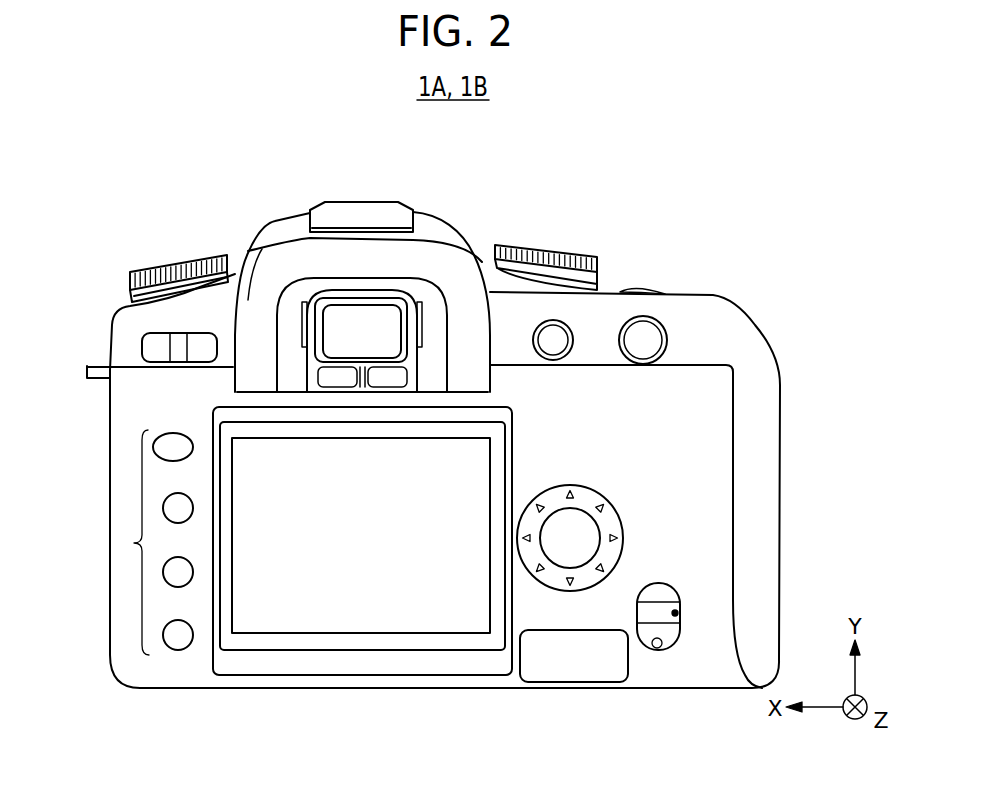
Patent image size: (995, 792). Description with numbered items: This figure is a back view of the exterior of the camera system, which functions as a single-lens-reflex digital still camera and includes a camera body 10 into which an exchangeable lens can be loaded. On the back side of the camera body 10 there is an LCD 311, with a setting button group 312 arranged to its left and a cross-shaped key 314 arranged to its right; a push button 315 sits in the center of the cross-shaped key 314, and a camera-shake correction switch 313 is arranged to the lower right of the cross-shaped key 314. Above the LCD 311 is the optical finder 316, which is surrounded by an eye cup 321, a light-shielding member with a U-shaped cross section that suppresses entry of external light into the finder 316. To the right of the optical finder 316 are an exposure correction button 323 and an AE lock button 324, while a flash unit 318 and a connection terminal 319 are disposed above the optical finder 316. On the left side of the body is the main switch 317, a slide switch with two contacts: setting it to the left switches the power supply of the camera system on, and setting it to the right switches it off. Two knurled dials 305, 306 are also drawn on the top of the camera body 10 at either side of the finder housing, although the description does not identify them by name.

The camera body 10 is at (134, 259).
The sub command dial 305 is at (539, 248).
The main command dial 306 is at (171, 267).
The LCD 311 is at (348, 618).
The setting button group 312 is at (134, 543).
The camera-shake correction switch 313 is at (657, 652).
The cross-shaped key 314 is at (580, 495).
The push button 315 is at (588, 528).
The optical finder 316 is at (388, 318).
The main switch 317 is at (140, 349).
The flash unit 318 is at (297, 217).
The connection terminal 319 is at (356, 196).
The eye cup 321 is at (280, 258).
The exposure correction button 323 is at (560, 337).
The AE lock button 324 is at (644, 335).